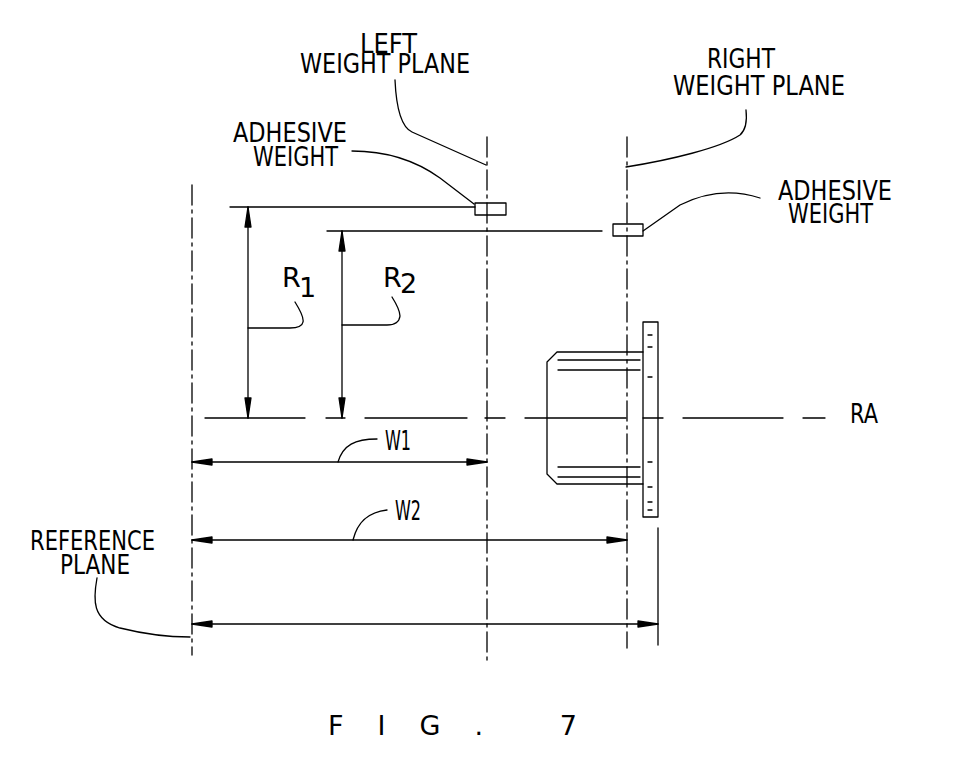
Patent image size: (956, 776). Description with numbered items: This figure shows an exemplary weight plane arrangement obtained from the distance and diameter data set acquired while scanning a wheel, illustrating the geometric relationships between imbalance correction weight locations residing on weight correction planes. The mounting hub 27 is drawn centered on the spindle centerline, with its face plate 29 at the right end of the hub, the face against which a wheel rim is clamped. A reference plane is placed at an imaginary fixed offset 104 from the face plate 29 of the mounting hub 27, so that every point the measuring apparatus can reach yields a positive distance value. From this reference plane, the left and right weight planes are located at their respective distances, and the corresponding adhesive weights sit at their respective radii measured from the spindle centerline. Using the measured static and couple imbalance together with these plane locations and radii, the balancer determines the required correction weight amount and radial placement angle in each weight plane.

The mounting hub 27 is at (603, 485).
The face plate 29 is at (658, 353).
The fixed offset 104 is at (368, 623).